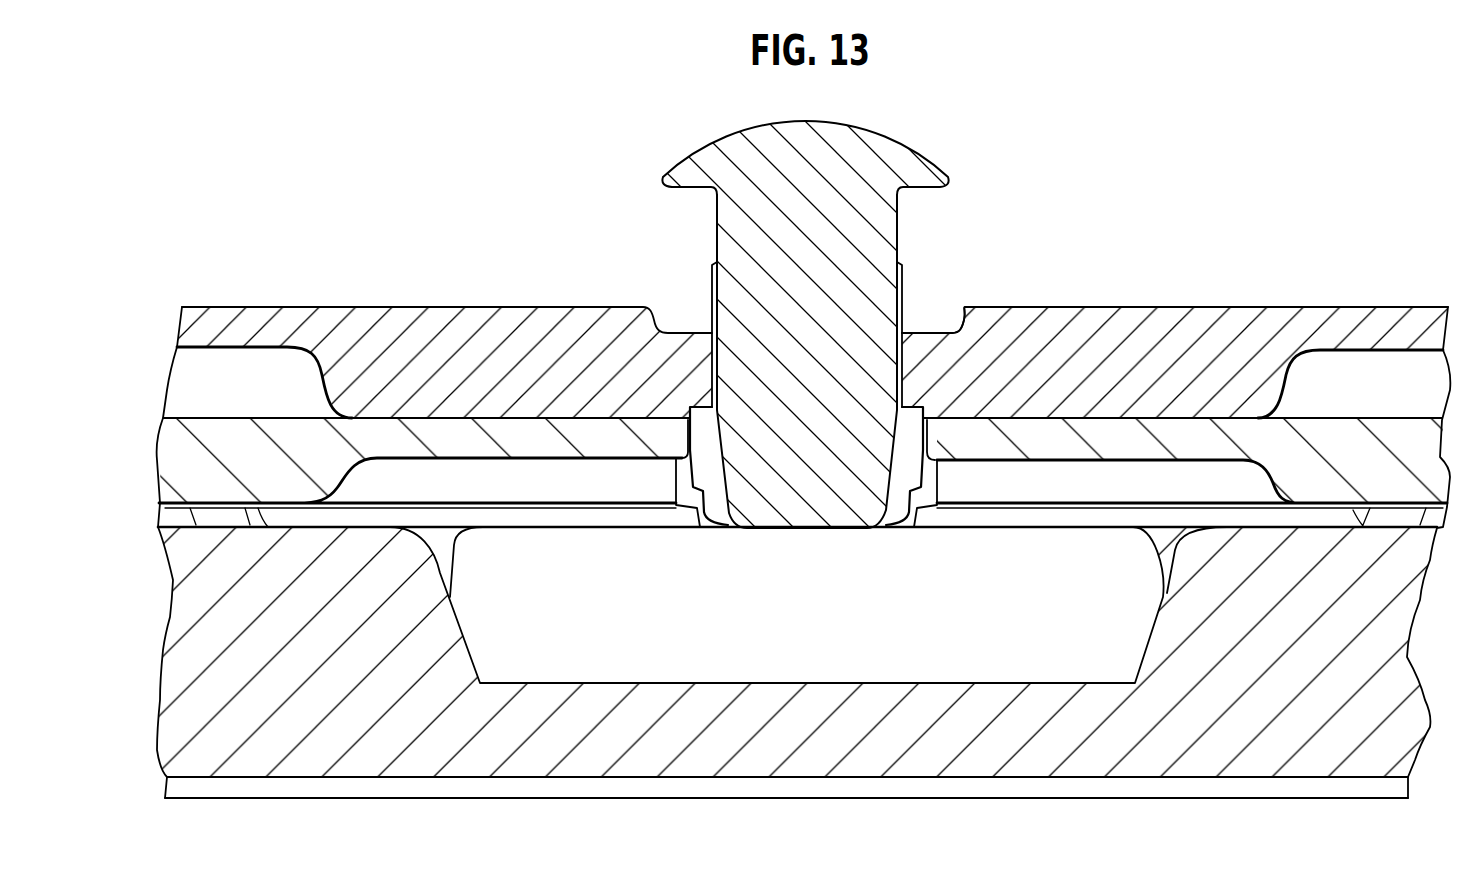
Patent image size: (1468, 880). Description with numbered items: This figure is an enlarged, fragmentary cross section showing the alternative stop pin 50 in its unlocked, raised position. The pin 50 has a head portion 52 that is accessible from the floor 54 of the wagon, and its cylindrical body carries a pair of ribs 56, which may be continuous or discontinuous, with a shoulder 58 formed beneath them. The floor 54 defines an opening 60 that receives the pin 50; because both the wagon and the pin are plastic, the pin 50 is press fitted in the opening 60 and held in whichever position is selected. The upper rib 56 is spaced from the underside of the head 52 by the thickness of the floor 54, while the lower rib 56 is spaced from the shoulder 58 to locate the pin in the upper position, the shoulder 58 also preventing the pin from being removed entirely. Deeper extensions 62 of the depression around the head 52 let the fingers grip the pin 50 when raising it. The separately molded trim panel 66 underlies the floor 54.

The pin 50 is at (803, 300).
The head portion 52 is at (875, 148).
The floor 54 is at (447, 307).
The ribs 56 is at (711, 333).
The shoulder 58 is at (711, 407).
The opening 60 is at (893, 373).
The extension 62 is at (942, 312).
The trim panel 66 is at (568, 432).